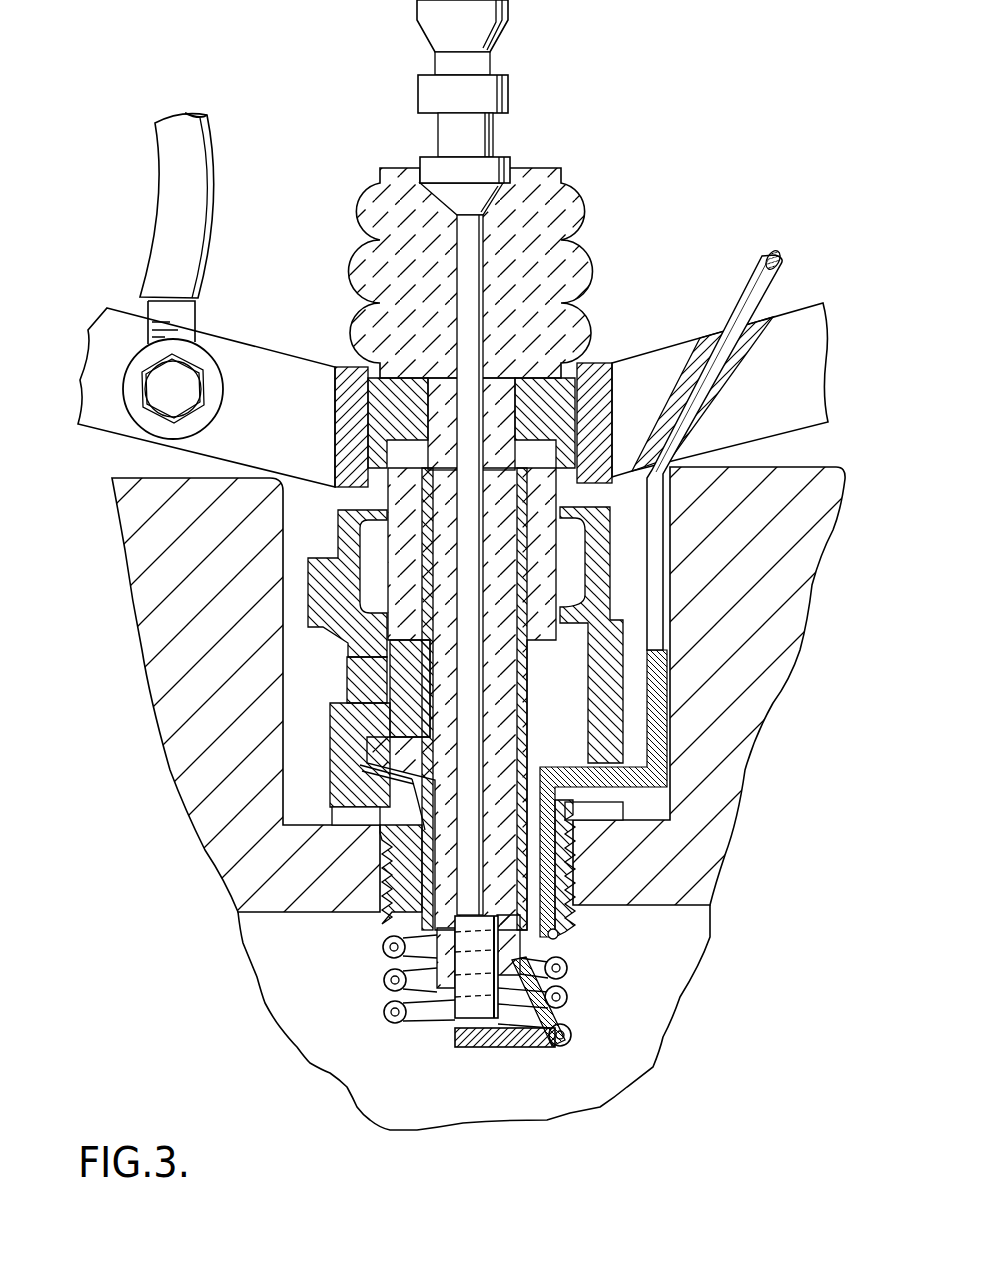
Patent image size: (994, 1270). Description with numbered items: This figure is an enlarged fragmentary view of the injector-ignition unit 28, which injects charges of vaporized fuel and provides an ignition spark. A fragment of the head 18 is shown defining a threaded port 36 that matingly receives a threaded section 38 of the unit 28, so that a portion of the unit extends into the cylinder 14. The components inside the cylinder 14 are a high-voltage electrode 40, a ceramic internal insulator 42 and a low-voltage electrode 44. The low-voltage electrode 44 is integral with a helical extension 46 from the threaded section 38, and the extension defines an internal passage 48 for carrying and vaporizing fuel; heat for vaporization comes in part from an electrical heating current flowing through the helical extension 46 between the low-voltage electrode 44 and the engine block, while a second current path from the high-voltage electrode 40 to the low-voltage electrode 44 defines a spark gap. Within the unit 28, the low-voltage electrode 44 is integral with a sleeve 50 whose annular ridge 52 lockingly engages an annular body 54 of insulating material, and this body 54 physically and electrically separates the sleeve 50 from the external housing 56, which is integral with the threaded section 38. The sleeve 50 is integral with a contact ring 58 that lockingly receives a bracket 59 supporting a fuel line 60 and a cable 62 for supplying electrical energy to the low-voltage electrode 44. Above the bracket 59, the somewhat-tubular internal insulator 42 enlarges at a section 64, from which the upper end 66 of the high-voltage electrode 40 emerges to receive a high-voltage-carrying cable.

The cylinder 14 is at (474, 1017).
The head 18 is at (825, 493).
The injector-ignition unit 28 is at (625, 720).
The threaded port 36 is at (565, 893).
The threaded section 38 is at (565, 933).
The high-voltage electrode 40 is at (457, 1007).
The ceramic internal insulator 42 is at (545, 1040).
The low-voltage electrode 44 is at (480, 1048).
The helical extension 46 is at (387, 975).
The internal passage 48 is at (565, 1000).
The sleeve 50 is at (427, 780).
The annular ridge 52 is at (397, 718).
The annular body of insulating material 54 is at (377, 662).
The external housing 56 is at (307, 598).
The contact ring 58 is at (565, 415).
The bracket 59 is at (807, 371).
The fuel line 60 is at (760, 270).
The cable 62 is at (200, 218).
The enlarged section 64 is at (560, 248).
The upper end of the high-voltage electrode 66 is at (480, 145).